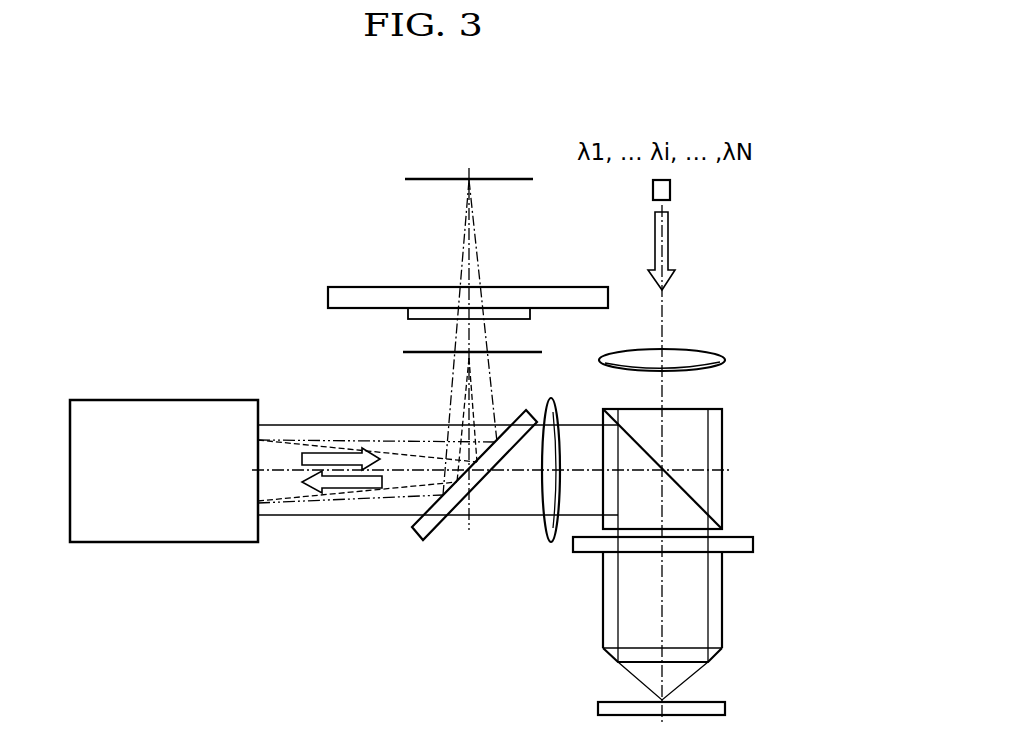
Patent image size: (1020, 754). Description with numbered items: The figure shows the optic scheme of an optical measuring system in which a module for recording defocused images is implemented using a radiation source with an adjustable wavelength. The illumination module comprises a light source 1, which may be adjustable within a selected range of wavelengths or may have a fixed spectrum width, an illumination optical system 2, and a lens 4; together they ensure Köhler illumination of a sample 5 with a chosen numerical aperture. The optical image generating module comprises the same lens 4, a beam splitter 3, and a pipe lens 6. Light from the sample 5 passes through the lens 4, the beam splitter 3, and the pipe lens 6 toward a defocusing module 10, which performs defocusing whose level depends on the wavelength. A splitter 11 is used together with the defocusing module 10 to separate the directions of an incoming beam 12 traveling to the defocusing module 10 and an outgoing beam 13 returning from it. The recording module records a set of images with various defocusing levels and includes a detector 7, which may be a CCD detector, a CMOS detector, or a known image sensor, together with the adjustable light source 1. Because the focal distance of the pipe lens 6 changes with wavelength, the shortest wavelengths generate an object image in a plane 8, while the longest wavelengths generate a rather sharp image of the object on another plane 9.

The light source 1 is at (671, 190).
The illumination optical system 2 is at (725, 360).
The beam splitter 3 is at (722, 445).
The lens 4 is at (722, 600).
The sample 5 is at (725, 710).
The pipe lens 6 is at (551, 543).
The detector 7 is at (350, 286).
The plane 8 is at (528, 351).
The plane 9 is at (417, 178).
The defocusing module 10 is at (166, 400).
The splitter 11 is at (428, 535).
The incoming beam 12 is at (336, 493).
The outgoing beam 13 is at (316, 453).